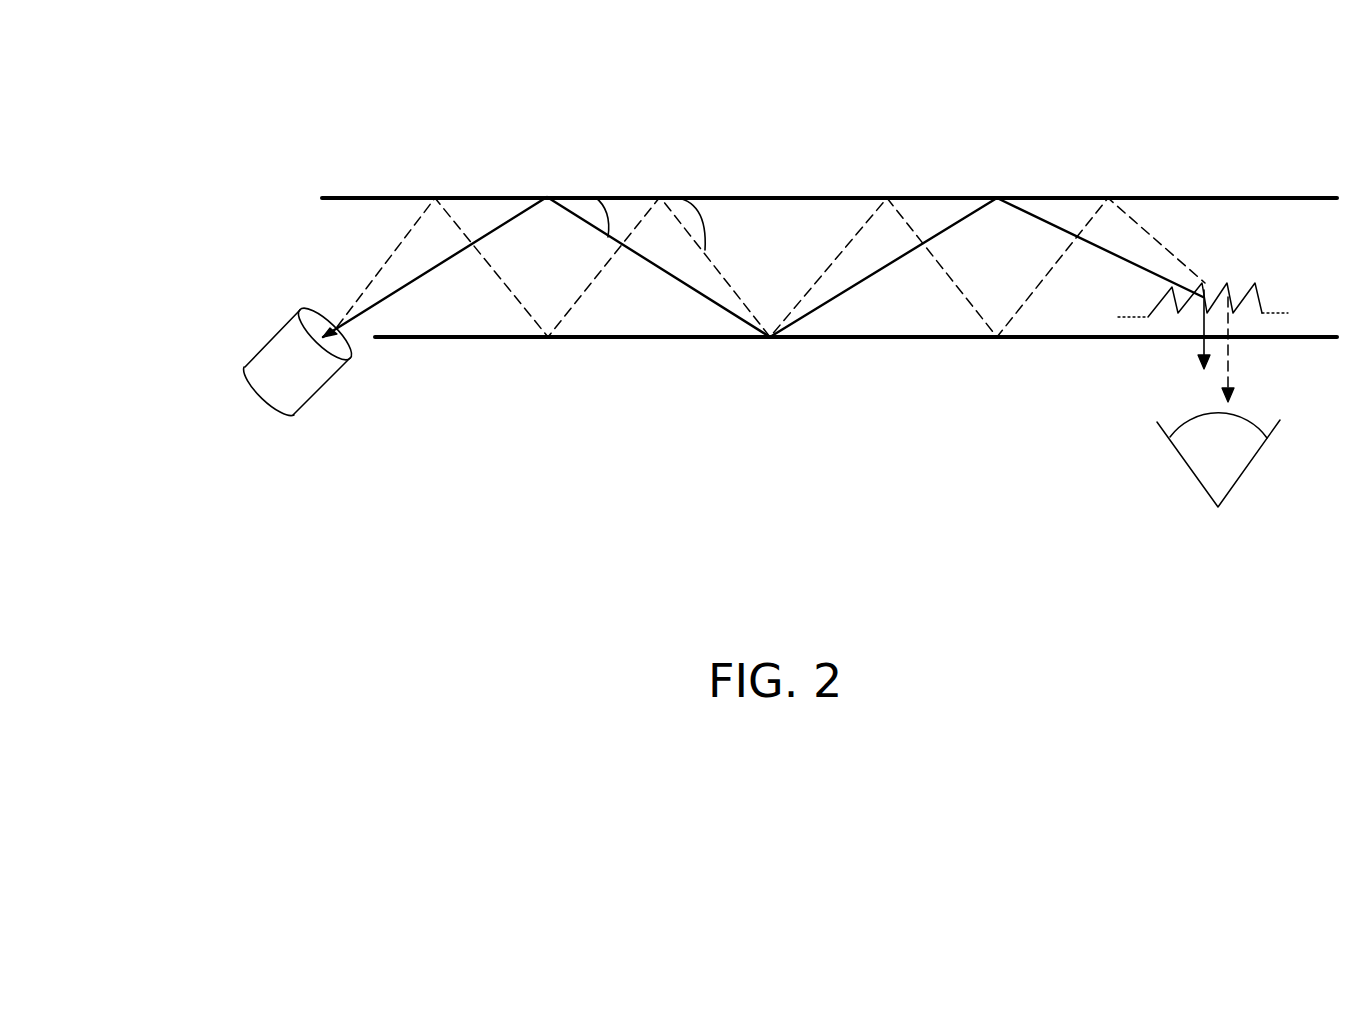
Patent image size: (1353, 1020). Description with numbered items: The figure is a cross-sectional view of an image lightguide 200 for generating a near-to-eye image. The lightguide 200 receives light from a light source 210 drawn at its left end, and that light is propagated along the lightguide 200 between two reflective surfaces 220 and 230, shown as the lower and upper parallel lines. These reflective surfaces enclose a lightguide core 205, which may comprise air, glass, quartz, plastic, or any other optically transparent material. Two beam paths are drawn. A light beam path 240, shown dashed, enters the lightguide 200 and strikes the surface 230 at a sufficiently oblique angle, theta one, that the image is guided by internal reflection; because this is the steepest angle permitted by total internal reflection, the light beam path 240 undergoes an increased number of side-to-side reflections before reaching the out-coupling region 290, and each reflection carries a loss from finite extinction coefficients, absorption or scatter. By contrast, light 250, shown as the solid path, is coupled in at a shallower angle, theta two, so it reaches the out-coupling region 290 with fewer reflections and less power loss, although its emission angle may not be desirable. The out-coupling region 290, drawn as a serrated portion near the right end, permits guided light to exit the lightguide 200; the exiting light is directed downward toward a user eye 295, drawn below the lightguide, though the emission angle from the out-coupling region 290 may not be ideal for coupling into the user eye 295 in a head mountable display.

The lightguide 200 is at (709, 536).
The lightguide core 205 is at (1206, 228).
The light source 210 is at (305, 375).
The surface 220 is at (1050, 337).
The surface 230 is at (1031, 198).
The light beam path 240 is at (355, 293).
The light 250 is at (492, 232).
The out-coupling region 290 is at (1260, 292).
The user eye 295 is at (1225, 485).